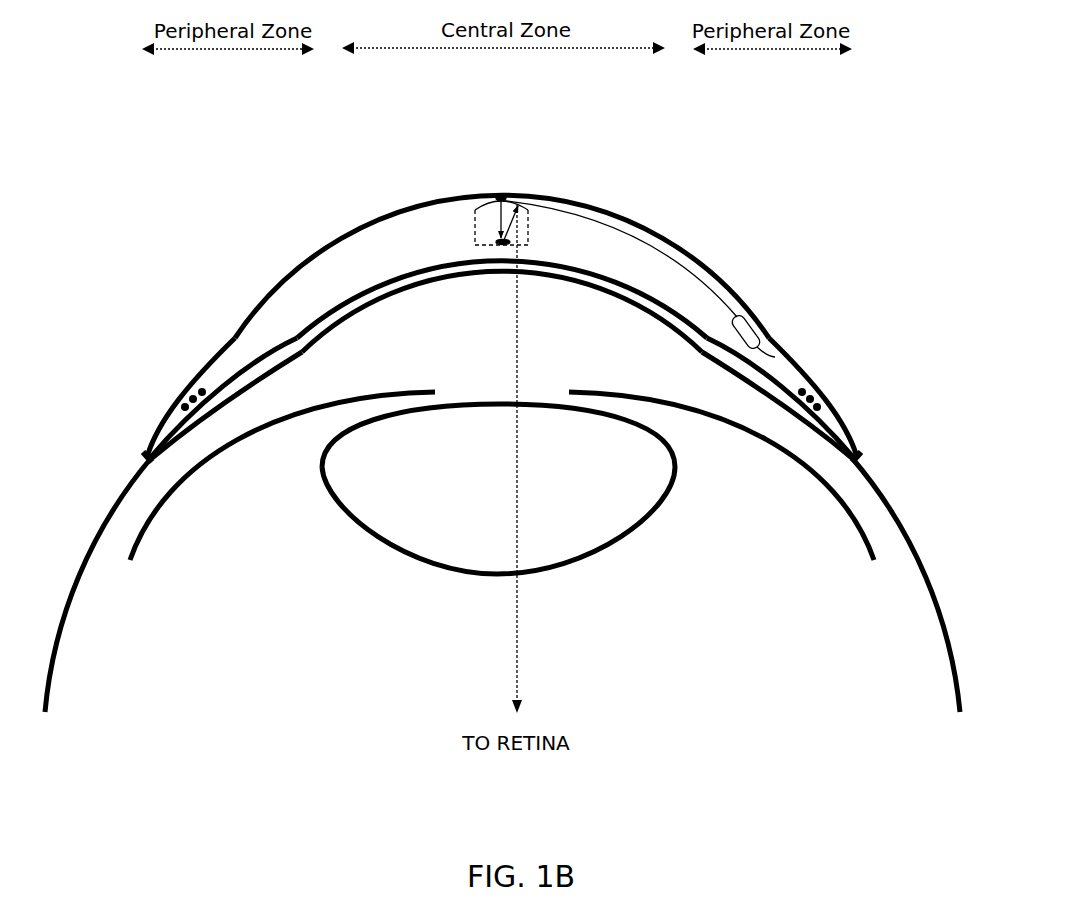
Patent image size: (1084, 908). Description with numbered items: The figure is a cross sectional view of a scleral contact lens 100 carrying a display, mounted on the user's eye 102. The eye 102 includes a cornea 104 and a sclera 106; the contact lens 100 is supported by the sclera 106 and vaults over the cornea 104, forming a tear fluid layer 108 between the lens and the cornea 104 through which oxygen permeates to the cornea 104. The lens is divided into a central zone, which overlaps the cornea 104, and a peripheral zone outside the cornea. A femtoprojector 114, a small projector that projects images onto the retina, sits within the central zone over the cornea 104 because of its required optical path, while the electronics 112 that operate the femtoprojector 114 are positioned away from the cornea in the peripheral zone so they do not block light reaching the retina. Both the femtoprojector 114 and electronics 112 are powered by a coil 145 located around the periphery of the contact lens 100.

The scleral contact lens 100 is at (473, 190).
The eye 102 is at (502, 552).
The cornea 104 is at (400, 292).
The sclera 106 is at (173, 447).
The tear fluid layer 108 is at (358, 287).
The electronics 112 is at (765, 325).
The femtoprojector 114 is at (533, 220).
The coil 145 is at (822, 398).